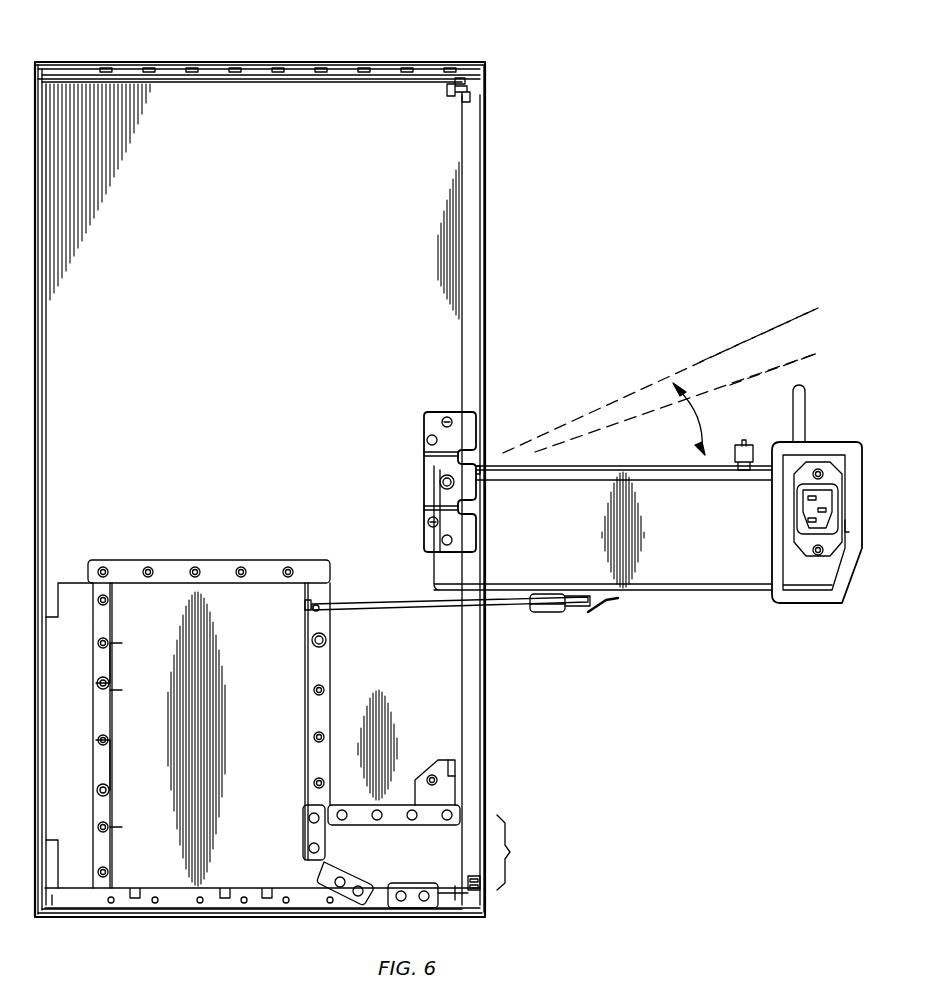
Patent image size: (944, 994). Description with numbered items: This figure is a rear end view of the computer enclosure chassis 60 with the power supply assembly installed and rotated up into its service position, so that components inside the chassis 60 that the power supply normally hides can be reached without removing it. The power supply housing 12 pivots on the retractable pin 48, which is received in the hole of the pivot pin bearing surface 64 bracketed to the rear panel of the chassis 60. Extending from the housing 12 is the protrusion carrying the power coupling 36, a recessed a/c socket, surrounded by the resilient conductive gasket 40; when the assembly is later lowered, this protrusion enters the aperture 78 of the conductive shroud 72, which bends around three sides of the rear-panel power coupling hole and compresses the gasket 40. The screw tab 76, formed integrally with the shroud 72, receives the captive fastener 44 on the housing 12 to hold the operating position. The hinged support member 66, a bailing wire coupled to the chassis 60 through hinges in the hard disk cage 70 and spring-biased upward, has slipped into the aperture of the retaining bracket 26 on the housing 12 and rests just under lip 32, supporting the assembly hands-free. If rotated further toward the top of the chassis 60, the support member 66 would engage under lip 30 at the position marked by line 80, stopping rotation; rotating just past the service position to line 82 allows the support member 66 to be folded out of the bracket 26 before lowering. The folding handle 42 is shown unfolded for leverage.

The computer enclosure chassis 60 is at (263, 63).
The hard disk cage 70 is at (190, 560).
The conductive shroud 72 is at (312, 803).
The screw tab 76 is at (440, 758).
The aperture 78 is at (518, 852).
The pivot pin bearing surface 64 is at (435, 412).
The pin 48 is at (436, 482).
The housing 12 is at (700, 600).
The line 80 is at (713, 352).
The line 82 is at (760, 378).
The fastener 44 is at (741, 442).
The conductive gasket 40 is at (794, 511).
The folding handle 42 is at (806, 392).
The power coupling 36 is at (797, 512).
The hinged support member 66 is at (410, 614).
The lip 30 is at (545, 614).
The lip 32 is at (588, 614).
The retaining bracket 26 is at (612, 604).